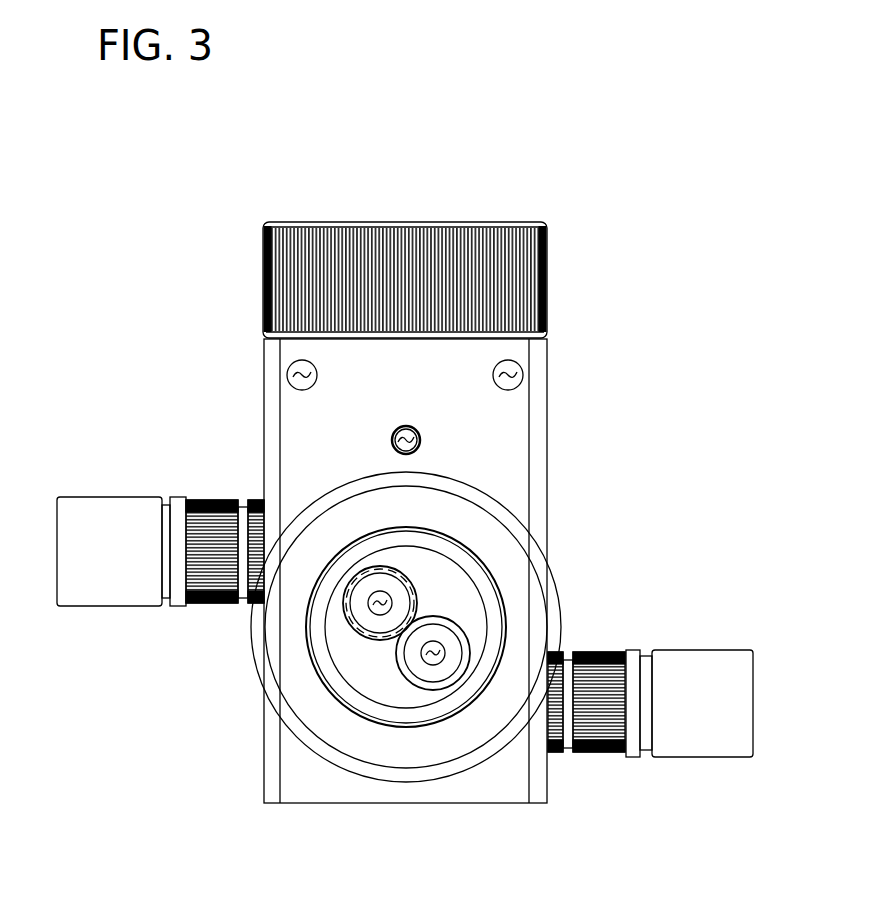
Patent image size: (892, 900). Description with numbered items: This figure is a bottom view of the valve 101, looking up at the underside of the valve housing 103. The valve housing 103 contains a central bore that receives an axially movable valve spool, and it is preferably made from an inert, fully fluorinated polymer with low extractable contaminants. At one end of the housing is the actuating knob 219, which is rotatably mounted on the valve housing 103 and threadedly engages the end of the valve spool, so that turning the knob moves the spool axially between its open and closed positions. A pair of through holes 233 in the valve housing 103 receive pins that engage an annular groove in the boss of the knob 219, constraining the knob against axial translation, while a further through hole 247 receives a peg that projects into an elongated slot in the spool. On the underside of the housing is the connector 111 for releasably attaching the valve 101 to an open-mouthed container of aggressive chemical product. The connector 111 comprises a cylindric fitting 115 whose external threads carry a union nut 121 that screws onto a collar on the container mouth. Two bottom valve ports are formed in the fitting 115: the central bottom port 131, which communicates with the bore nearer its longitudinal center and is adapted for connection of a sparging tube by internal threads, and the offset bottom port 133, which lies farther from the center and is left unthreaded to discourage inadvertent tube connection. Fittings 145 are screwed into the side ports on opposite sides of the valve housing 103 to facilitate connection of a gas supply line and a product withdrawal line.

The valve 101 is at (606, 234).
The actuating knob 219 is at (263, 229).
The valve housing 103 is at (285, 448).
The through holes 233 is at (292, 372).
The through hole 247 is at (415, 430).
The connector 111 is at (558, 578).
The union nut 121 is at (305, 710).
The cylindric fitting 115 is at (372, 683).
The central bottom port 131 is at (378, 615).
The offset bottom port 133 is at (432, 662).
The fittings 145 is at (79, 597).